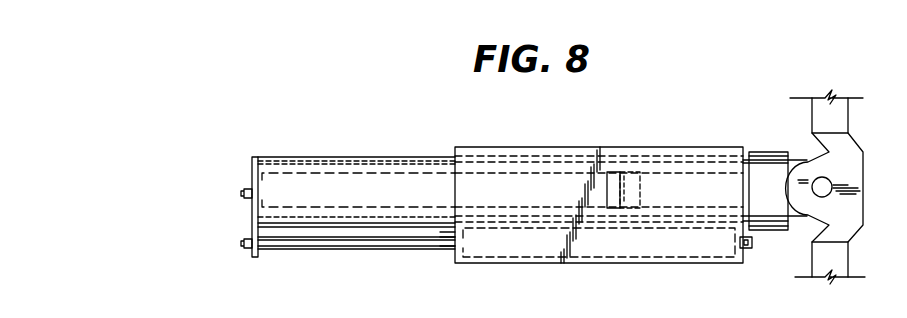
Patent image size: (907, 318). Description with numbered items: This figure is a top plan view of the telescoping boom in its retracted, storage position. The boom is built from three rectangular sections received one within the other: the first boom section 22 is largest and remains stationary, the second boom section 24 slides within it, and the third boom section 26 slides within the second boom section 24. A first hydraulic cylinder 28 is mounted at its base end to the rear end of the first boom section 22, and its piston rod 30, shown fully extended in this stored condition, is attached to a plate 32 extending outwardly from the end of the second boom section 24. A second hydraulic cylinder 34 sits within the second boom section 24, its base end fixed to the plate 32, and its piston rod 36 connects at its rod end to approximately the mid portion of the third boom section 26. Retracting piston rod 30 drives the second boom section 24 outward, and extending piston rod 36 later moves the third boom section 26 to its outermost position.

The first boom section 22 is at (515, 147).
The second boom section 24 is at (441, 156).
The third boom section 26 is at (761, 152).
The first hydraulic cylinder 28 is at (542, 258).
The piston rod 30 is at (357, 250).
The plate 32 is at (252, 219).
The second hydraulic cylinder 34 is at (347, 173).
The piston rod 36 is at (613, 178).